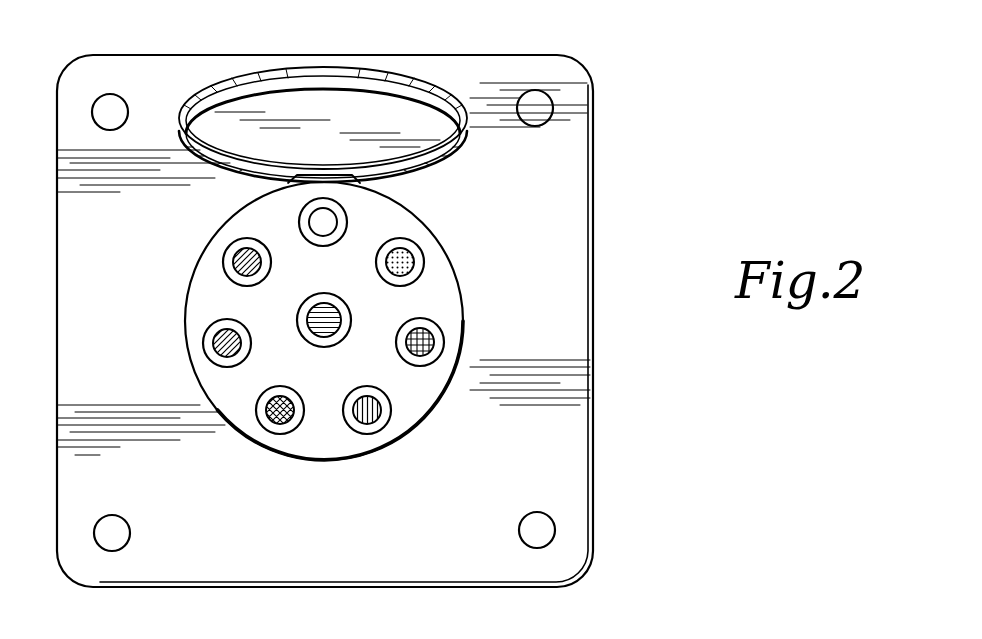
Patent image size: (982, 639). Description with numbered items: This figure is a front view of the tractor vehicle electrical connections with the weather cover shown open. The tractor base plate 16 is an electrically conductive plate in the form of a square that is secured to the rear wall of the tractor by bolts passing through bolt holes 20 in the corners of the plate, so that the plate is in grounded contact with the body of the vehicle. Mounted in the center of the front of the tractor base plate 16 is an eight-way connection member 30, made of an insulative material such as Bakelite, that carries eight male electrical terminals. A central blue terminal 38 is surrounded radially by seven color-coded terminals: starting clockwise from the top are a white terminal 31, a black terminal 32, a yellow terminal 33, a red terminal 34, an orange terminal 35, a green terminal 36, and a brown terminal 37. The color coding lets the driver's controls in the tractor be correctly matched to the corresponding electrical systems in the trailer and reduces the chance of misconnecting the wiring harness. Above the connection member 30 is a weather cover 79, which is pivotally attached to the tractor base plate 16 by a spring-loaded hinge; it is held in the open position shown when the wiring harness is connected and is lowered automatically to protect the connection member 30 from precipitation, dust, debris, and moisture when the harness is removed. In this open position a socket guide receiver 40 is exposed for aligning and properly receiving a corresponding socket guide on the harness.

The tractor base plate 16 is at (595, 438).
The bolt holes 20 is at (532, 127).
The connection member 30 is at (193, 340).
The white terminal 31 is at (335, 222).
The black terminal 32 is at (414, 265).
The yellow terminal 33 is at (418, 353).
The red terminal 34 is at (362, 414).
The orange terminal 35 is at (281, 414).
The green terminal 36 is at (218, 323).
The brown terminal 37 is at (234, 249).
The central blue terminal 38 is at (308, 323).
The socket guide receiver 40 is at (325, 175).
The weather cover 79 is at (343, 73).